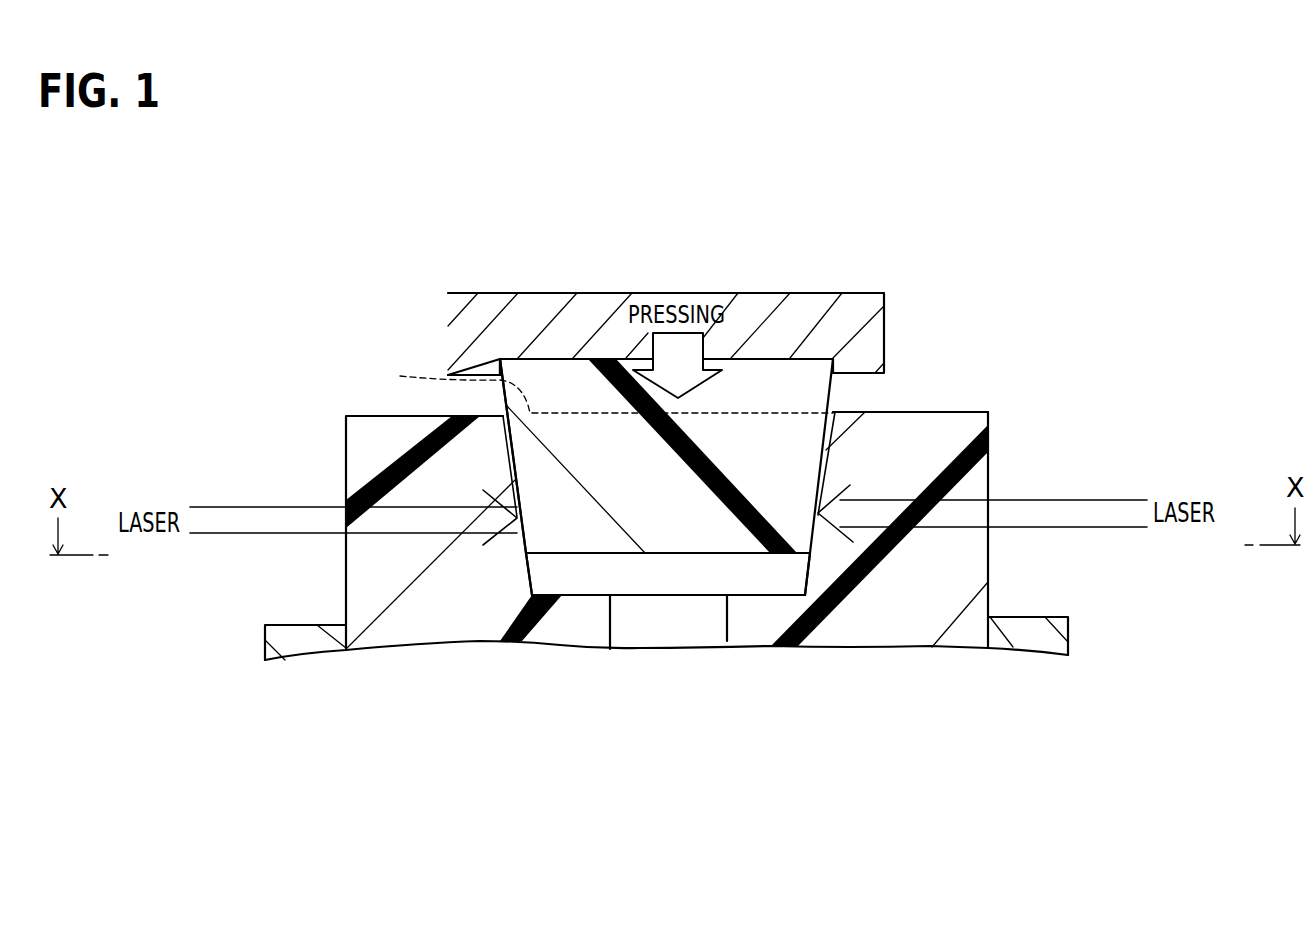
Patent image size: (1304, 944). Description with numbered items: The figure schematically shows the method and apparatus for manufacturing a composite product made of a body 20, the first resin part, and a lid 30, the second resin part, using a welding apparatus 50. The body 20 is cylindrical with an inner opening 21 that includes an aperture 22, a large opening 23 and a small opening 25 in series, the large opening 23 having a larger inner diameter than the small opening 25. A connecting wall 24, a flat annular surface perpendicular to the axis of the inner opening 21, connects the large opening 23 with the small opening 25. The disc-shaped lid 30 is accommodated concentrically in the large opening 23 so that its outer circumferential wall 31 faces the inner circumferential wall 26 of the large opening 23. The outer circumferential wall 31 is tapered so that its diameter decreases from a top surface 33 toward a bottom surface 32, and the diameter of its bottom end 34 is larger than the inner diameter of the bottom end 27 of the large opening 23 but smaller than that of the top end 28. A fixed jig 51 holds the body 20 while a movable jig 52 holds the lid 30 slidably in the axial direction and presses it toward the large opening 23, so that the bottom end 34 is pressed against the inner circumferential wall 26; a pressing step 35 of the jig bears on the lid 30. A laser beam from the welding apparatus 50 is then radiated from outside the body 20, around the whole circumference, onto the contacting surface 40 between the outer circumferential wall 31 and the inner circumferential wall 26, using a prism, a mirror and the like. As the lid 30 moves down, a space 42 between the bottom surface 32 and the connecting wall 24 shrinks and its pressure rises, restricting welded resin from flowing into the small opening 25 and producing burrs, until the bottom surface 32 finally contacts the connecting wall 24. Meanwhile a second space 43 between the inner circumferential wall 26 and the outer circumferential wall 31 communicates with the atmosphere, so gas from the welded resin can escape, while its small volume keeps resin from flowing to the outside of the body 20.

The body 20 is at (1005, 470).
The inner opening 21 is at (745, 724).
The aperture 22 is at (603, 387).
The large opening 23 is at (687, 582).
The connecting wall 24 is at (595, 597).
The small opening 25 is at (721, 640).
The inner circumferential wall 26 is at (510, 471).
The bottom end 27 is at (535, 597).
The top end 28 is at (513, 457).
The lid 30 is at (848, 391).
The outer circumferential wall 31 is at (503, 431).
The bottom surface 32 is at (650, 557).
The top surface 33 is at (812, 358).
The bottom end 34 is at (527, 553).
The pressing step of jig 35 is at (500, 362).
The contacting surface 40 is at (810, 528).
The space 42 is at (781, 583).
The second space 43 is at (836, 420).
The welding apparatus 50 is at (471, 268).
The fixed jig 51 is at (1017, 628).
The movable jig 52 is at (873, 341).